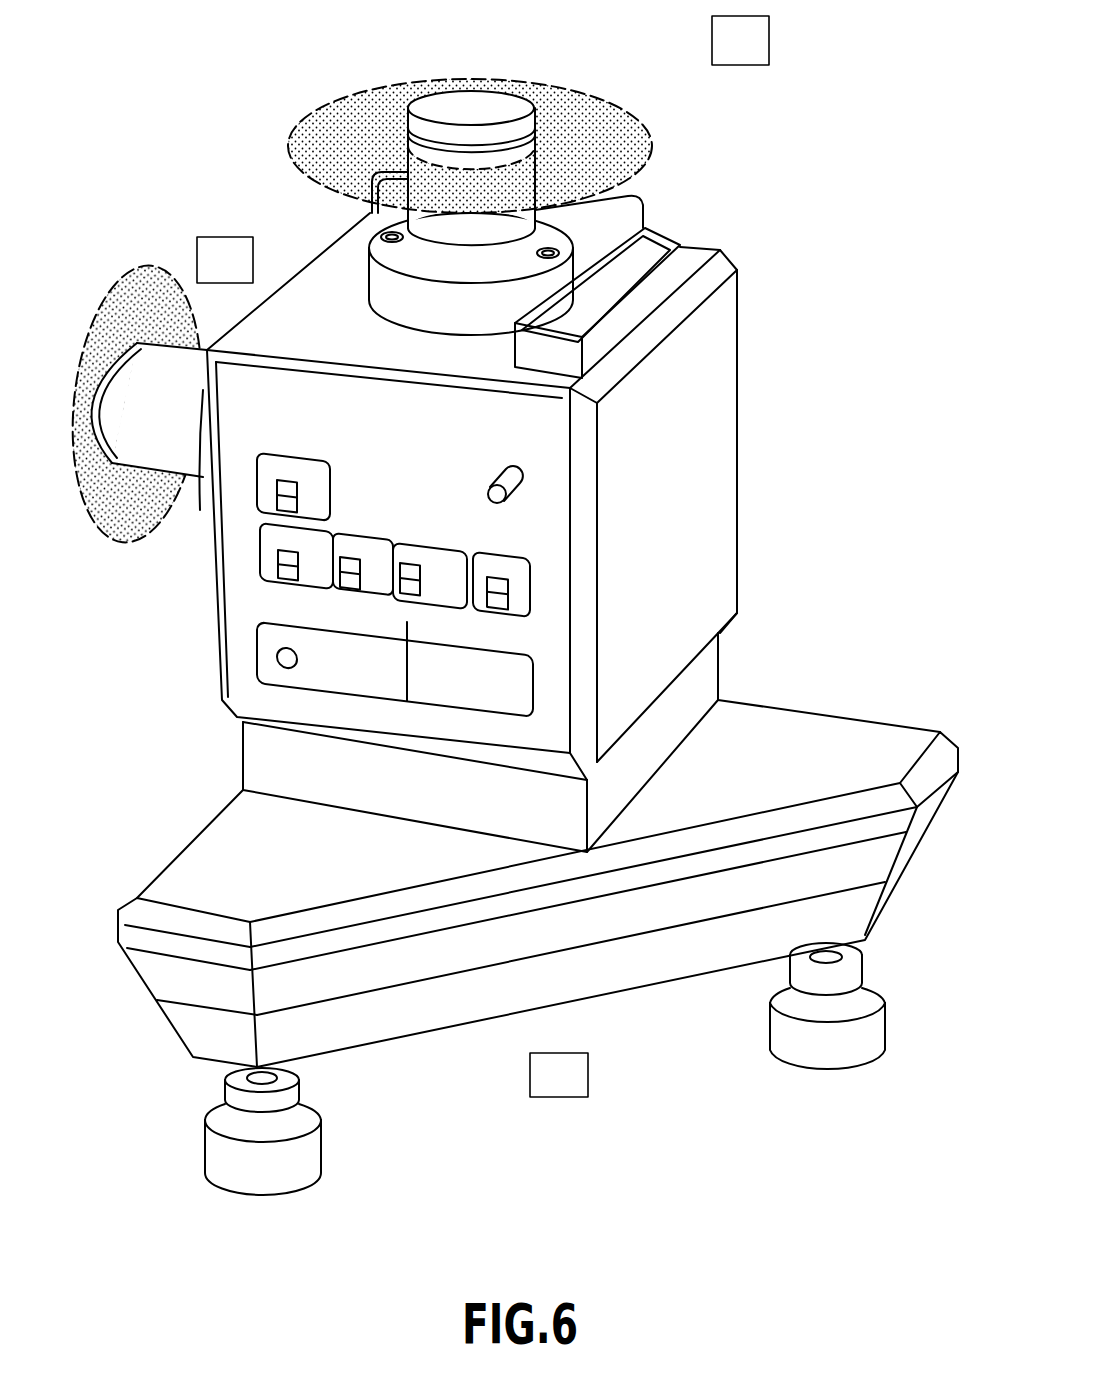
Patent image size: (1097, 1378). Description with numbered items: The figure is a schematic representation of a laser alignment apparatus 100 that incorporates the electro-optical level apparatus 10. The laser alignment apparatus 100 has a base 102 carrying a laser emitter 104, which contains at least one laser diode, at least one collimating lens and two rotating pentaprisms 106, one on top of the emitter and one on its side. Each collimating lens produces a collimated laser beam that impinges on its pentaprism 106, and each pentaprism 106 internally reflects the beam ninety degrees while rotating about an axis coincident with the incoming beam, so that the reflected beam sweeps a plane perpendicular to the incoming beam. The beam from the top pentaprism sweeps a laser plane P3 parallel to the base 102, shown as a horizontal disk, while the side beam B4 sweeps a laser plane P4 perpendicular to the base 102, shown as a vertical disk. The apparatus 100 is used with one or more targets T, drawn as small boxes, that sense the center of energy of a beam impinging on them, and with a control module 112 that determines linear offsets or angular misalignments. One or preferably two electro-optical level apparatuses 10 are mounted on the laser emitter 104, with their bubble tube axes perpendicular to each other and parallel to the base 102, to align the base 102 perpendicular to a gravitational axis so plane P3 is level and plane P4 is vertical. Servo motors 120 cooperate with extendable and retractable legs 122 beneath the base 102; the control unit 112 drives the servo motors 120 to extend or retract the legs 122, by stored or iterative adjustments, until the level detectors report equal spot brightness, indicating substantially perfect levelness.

The laser alignment apparatus 100 is at (540, 704).
The base 102 is at (812, 710).
The laser emitter 104 is at (762, 329).
The rotating pentaprism 106 is at (408, 110).
The electro-optical level apparatus 10 is at (370, 210).
The control module 112 is at (530, 1077).
The servo motor 120 is at (300, 1087).
The extendable and retractable leg 122 is at (323, 1150).
The collimated laser beam B4 is at (127, 513).
The laser plane P3 is at (561, 108).
The laser plane P4 is at (153, 497).
The target T is at (769, 40).